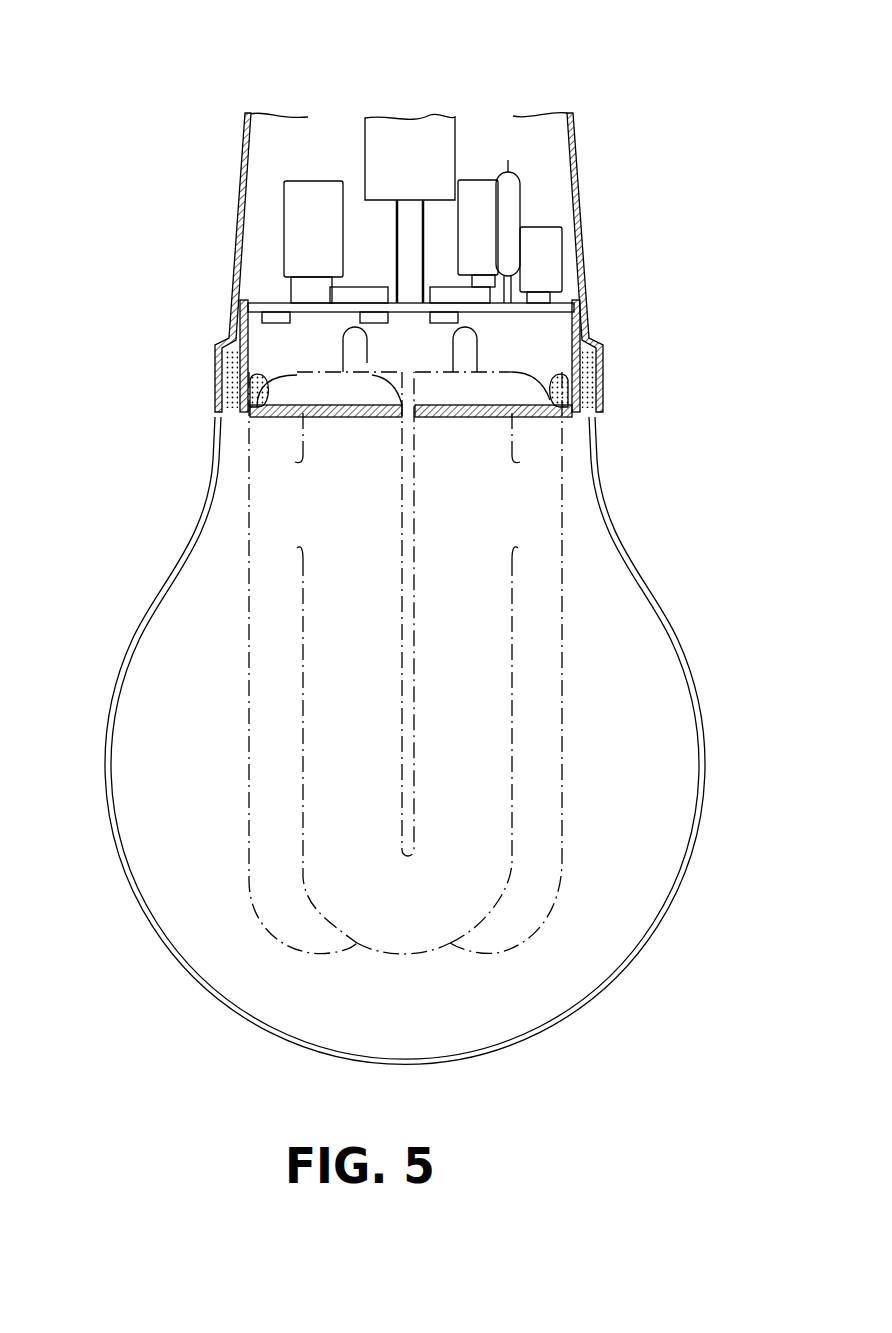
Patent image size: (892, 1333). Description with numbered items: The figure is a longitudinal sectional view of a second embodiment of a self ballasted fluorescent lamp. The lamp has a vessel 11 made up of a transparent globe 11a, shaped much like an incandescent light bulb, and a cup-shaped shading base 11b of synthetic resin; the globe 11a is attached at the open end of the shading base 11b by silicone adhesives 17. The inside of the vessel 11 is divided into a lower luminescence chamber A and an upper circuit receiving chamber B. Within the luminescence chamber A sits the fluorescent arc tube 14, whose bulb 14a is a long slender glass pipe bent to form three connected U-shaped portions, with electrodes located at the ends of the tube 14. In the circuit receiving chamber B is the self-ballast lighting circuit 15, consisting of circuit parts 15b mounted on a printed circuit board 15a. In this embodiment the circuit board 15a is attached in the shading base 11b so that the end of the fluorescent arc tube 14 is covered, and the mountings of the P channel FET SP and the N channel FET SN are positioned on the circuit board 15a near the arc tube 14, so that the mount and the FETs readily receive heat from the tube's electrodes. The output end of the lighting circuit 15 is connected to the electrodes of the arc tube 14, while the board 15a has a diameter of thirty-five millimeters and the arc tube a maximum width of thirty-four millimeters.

The vessel 11 is at (422, 588).
The transparent globe 11a is at (143, 620).
The shading base 11b is at (238, 175).
The fluorescent arc tube 14 is at (417, 663).
The bulb 14a is at (562, 787).
The self-ballast lighting circuit 15 is at (463, 157).
The printed circuit board 15a is at (305, 320).
The circuit parts 15b is at (327, 125).
The silicone adhesives 17 is at (245, 400).
The luminescence chamber A is at (647, 647).
The circuit receiving chamber B is at (473, 138).
The N channel FET SN is at (380, 330).
The P channel FET SP is at (445, 323).